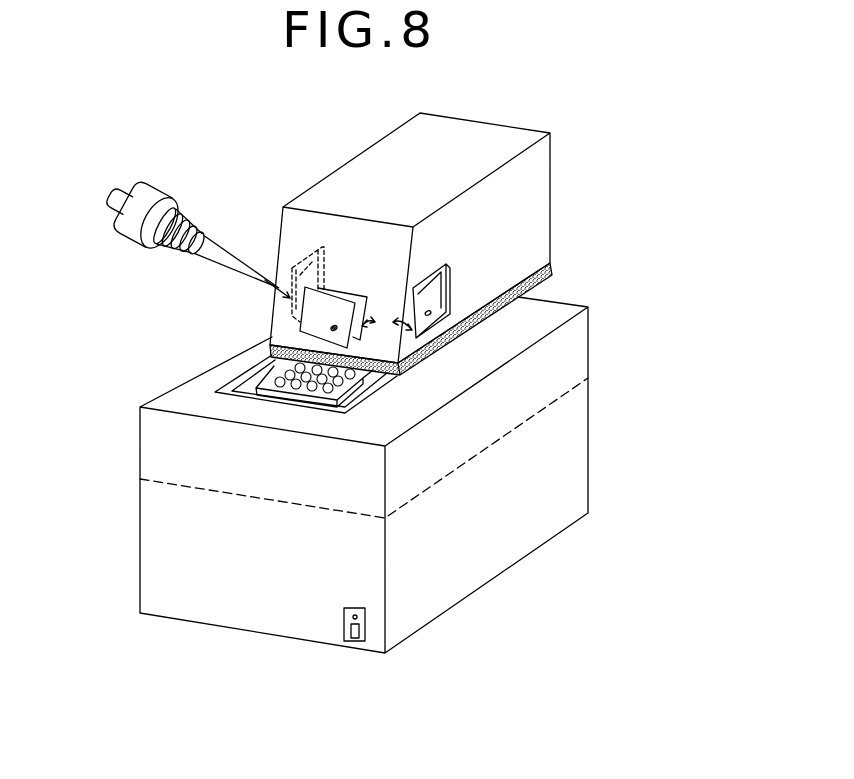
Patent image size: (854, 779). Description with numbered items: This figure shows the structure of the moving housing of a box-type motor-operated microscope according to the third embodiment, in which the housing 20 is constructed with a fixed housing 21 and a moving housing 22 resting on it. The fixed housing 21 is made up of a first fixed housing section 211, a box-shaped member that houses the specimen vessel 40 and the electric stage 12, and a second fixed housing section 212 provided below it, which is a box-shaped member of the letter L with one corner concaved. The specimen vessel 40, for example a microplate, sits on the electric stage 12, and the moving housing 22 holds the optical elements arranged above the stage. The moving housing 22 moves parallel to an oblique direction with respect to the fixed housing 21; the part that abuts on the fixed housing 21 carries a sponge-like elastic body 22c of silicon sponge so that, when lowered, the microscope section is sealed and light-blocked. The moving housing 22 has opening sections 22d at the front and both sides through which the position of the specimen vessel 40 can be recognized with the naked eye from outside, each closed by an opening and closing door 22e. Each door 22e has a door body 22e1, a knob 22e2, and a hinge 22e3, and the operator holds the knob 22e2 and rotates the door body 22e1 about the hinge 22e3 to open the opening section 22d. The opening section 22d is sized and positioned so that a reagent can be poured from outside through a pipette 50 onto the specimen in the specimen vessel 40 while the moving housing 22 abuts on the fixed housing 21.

The electric stage 12 is at (256, 392).
The housing 20 is at (733, 93).
The fixed housing 21 is at (680, 504).
The first fixed housing section 211 is at (568, 353).
The second fixed housing section 212 is at (568, 446).
The moving housing 22 is at (478, 137).
The sponge-like elastic body 22c is at (533, 287).
The opening section 22d is at (343, 296).
The opening and closing door 22e is at (333, 307).
The door body 22e1 is at (333, 328).
The knob 22e2 is at (310, 345).
The hinge 22e3 is at (306, 321).
The specimen vessel 40 is at (349, 383).
The pipette 50 is at (146, 191).